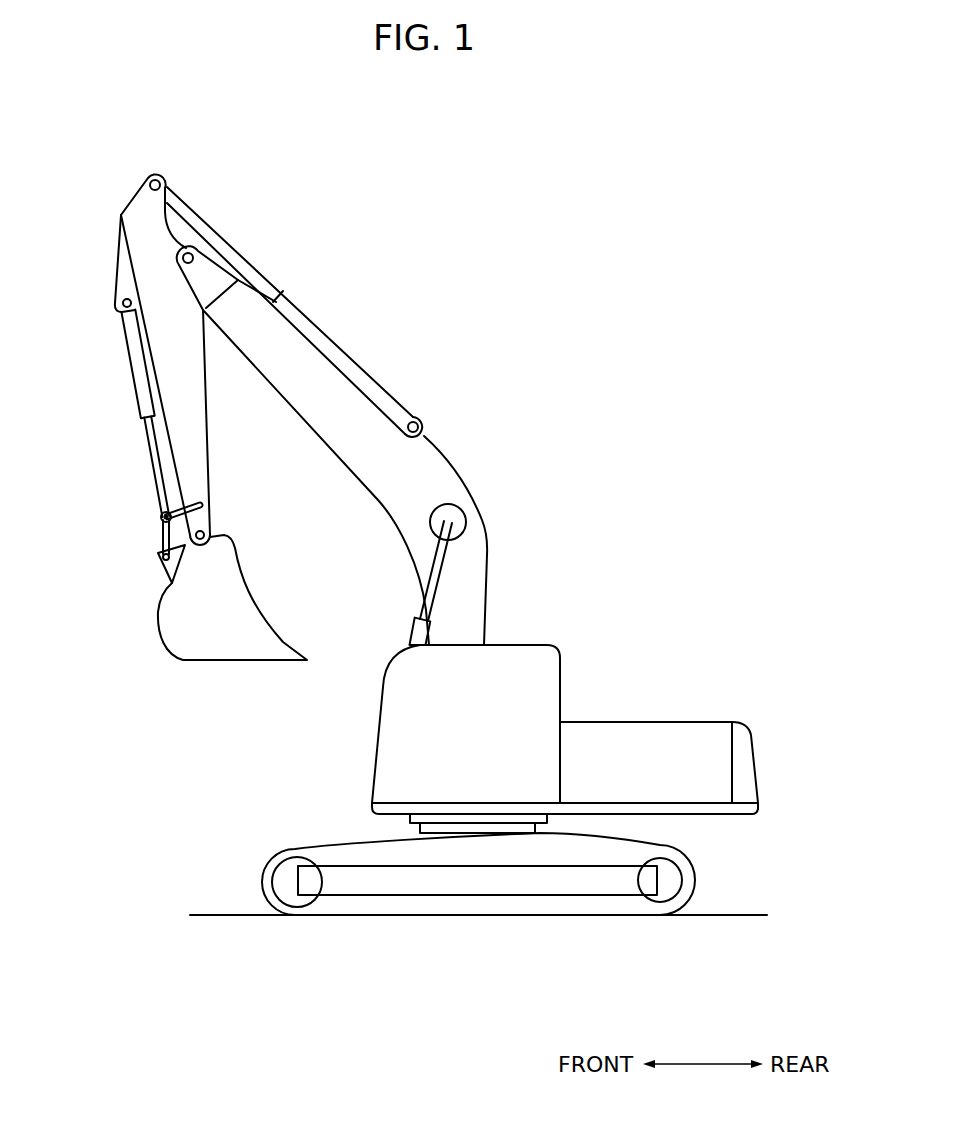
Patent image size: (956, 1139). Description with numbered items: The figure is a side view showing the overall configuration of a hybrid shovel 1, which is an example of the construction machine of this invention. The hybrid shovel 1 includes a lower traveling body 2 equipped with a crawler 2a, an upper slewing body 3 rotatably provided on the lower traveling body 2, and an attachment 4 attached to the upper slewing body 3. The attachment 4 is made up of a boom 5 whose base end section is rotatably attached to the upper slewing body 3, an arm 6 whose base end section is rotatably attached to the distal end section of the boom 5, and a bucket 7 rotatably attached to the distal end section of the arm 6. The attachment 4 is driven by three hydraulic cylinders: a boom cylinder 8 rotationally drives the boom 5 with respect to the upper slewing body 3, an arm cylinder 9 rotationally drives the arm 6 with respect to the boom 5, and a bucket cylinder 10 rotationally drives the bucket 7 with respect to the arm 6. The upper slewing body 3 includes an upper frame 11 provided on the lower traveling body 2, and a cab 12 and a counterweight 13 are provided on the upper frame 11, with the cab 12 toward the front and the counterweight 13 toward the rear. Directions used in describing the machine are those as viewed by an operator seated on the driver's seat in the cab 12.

The hybrid shovel 1 is at (628, 354).
The lower traveling body 2 is at (744, 889).
The crawler 2a is at (691, 862).
The upper slewing body 3 is at (710, 645).
The attachment 4 is at (380, 289).
The boom 5 is at (489, 553).
The arm 6 is at (208, 416).
The bucket 7 is at (256, 603).
The boom cylinder 8 is at (413, 628).
The arm cylinder 9 is at (363, 364).
The bucket cylinder 10 is at (142, 405).
The upper frame 11 is at (368, 818).
The cab 12 is at (518, 645).
The counterweight 13 is at (750, 728).